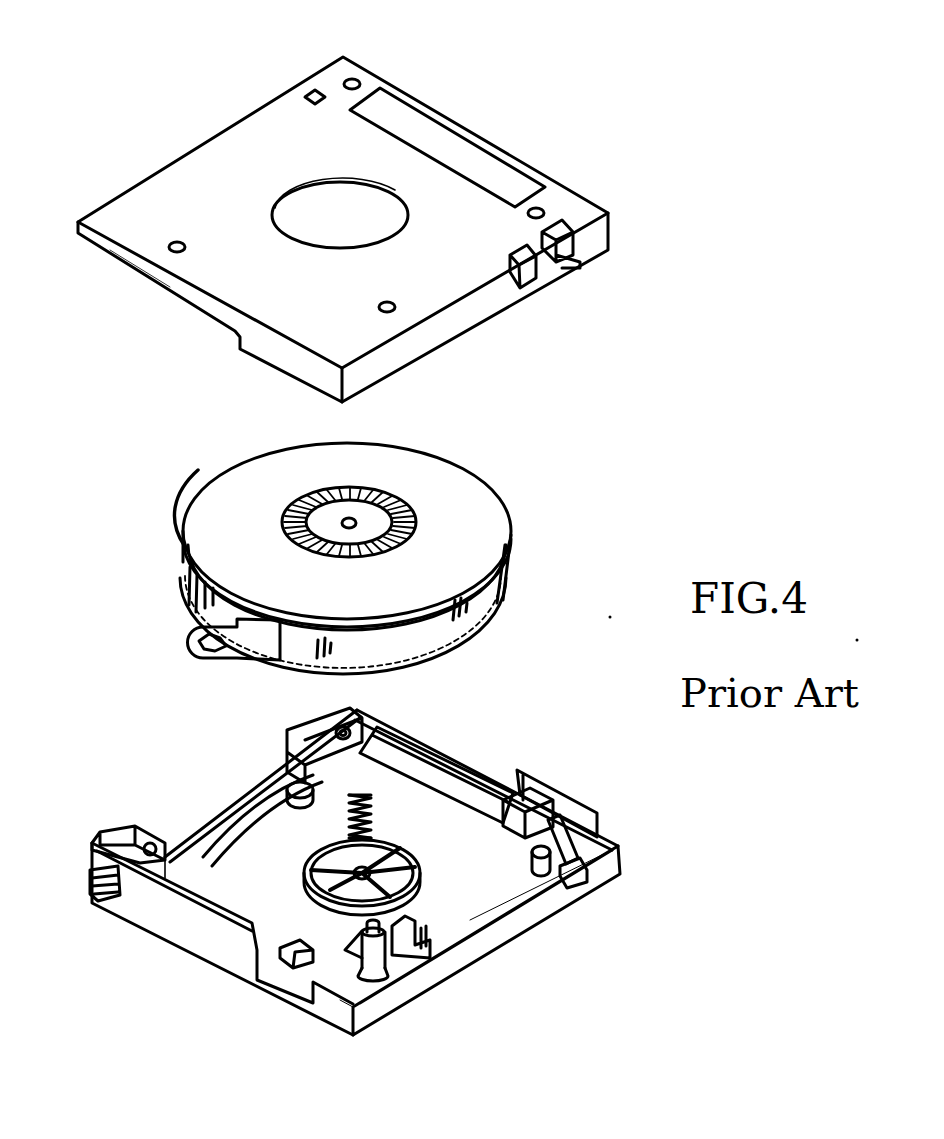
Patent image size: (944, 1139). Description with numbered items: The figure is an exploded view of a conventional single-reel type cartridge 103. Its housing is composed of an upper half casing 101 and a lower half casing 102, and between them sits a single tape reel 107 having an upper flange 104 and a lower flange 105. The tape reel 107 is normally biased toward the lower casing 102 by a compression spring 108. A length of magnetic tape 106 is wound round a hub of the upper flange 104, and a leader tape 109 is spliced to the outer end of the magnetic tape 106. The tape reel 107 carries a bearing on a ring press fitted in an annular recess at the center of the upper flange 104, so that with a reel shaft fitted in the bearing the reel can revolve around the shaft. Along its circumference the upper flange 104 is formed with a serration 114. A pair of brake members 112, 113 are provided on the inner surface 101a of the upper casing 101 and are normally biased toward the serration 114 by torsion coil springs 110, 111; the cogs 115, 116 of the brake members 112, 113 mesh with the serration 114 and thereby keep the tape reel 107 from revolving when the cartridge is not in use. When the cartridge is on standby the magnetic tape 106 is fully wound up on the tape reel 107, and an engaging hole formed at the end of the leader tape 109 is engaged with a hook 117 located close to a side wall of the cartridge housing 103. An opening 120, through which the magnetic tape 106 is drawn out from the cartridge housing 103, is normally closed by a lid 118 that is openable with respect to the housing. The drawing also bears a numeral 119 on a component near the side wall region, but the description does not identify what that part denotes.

The upper half casing 101 is at (362, 880).
The inner surface 101a is at (503, 898).
The lower half casing 102 is at (338, 229).
The single-reel type cartridge 103 is at (75, 510).
The upper flange 104 is at (507, 577).
The lower flange 105 is at (448, 480).
The magnetic tape 106 is at (190, 600).
The tape reel 107 is at (203, 482).
The compression spring 108 is at (372, 817).
The leader tape 109 is at (227, 660).
The torsion coil spring 110 is at (387, 753).
The torsion coil spring 111 is at (377, 1020).
The brake member 112 is at (313, 747).
The brake member 113 is at (398, 922).
The serration 114 is at (467, 647).
The cog 115 is at (270, 777).
The cog 116 is at (447, 953).
The hook 117 is at (287, 943).
The lid 118 is at (152, 915).
The door plate 119 is at (557, 800).
The opening 120 is at (160, 282).